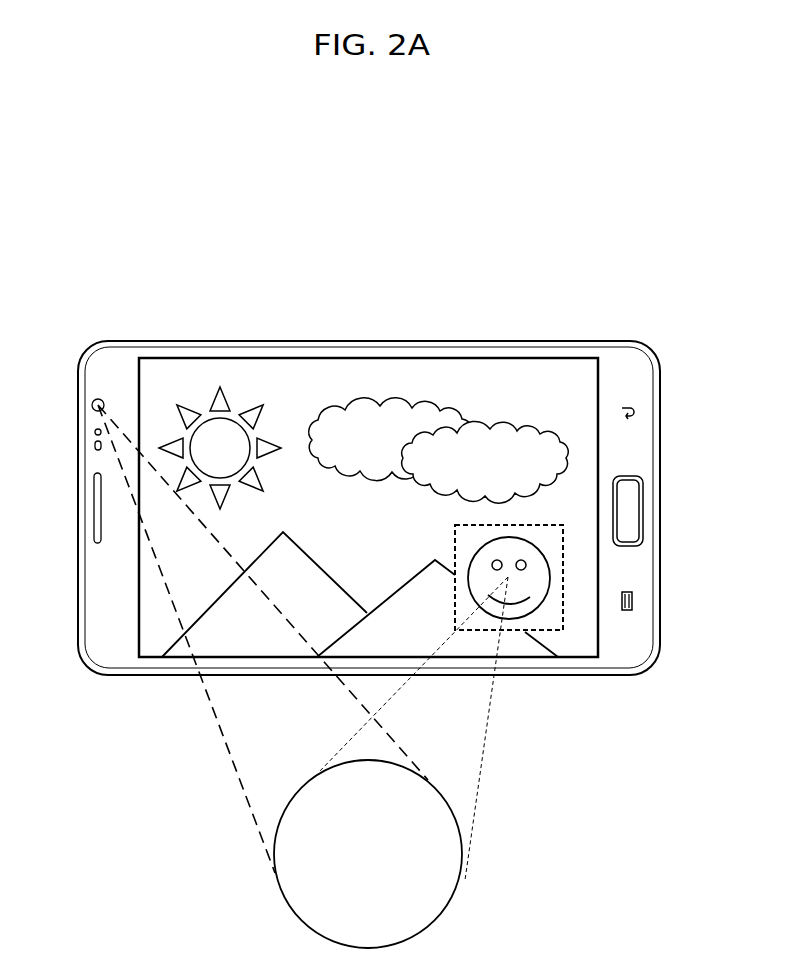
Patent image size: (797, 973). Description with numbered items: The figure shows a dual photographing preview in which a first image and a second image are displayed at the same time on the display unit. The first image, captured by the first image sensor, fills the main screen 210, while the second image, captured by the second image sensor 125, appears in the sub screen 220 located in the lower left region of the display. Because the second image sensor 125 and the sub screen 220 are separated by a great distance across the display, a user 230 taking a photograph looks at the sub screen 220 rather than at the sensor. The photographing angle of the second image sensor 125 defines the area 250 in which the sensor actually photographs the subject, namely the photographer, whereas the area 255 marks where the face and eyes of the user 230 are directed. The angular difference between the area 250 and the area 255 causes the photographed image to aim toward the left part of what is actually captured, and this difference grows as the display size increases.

The second image sensor 125 is at (92, 404).
The main screen 210 is at (398, 378).
The sub screen 220 is at (566, 579).
The user 230 is at (437, 920).
The photographing angle / actually photographed area 250 is at (228, 735).
The area at which the user looks 255 is at (488, 722).